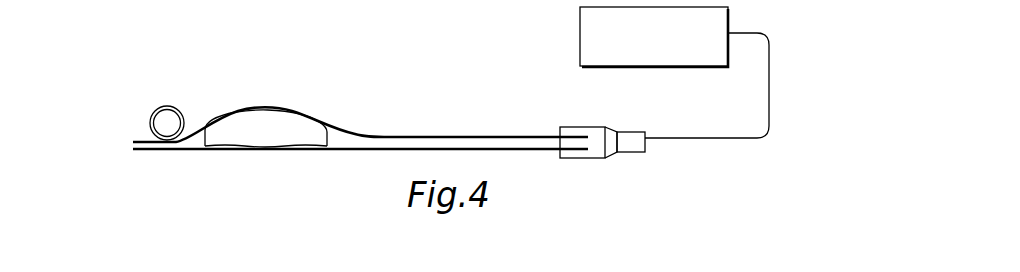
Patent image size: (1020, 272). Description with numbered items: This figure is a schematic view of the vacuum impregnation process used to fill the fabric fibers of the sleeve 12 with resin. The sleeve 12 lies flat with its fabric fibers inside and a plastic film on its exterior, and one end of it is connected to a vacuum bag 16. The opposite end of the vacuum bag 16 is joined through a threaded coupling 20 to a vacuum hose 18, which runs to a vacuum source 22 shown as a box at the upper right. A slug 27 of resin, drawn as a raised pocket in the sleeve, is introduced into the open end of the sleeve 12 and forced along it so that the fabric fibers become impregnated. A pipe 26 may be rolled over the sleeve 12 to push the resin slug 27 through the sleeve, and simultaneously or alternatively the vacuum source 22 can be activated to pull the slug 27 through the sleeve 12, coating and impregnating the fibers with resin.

The sleeve 12 is at (337, 133).
The vacuum bag 16 is at (453, 137).
The vacuum hose 18 is at (768, 95).
The threaded coupling 20 is at (593, 130).
The vacuum source 22 is at (588, 38).
The pipe 26 is at (154, 111).
The slug of resin 27 is at (260, 121).